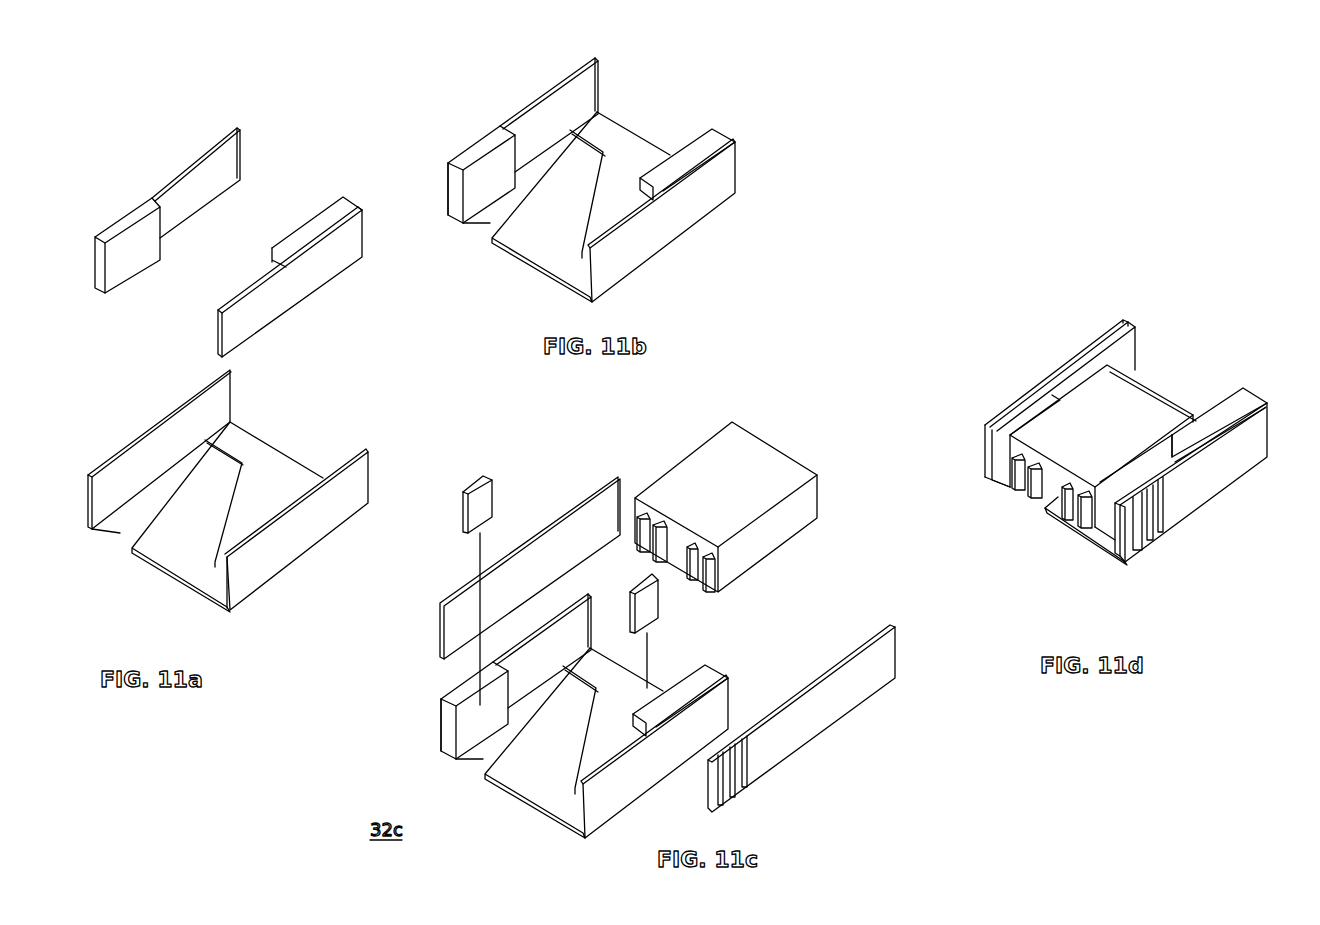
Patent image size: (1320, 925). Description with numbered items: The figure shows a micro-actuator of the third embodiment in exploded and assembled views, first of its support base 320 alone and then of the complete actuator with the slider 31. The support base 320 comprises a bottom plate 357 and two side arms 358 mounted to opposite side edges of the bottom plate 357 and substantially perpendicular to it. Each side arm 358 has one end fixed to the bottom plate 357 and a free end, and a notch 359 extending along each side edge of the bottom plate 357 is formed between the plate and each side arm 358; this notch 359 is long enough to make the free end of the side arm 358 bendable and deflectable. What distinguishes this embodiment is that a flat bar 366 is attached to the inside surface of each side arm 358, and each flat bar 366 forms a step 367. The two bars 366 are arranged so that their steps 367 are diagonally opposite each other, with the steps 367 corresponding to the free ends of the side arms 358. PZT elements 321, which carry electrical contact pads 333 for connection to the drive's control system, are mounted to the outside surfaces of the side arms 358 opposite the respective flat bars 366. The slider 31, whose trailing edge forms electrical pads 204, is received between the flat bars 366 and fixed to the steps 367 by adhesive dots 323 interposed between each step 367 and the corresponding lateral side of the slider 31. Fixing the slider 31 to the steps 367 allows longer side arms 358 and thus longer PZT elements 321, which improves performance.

In FIG. 11C, the slider 31 is at (768, 470).
In FIG. 11D, the slider 31 is at (1155, 398).
In FIG. 11C, the electrical pads 204 is at (710, 570).
In FIG. 11D, the electrical pads 204 is at (1003, 487).
In FIG. 11A, the support base 320 is at (162, 575).
In FIG. 11B, the support base 320 is at (512, 263).
In FIG. 11C, the support base 320 is at (558, 756).
In FIG. 11D, the support base 320 is at (1068, 527).
In FIG. 11C, the PZT elements 321 is at (837, 695).
In FIG. 11D, the PZT elements 321 is at (1182, 493).
In FIG. 11C, the adhesive dots 323 is at (480, 500).
In FIG. 11C, the electrical contact pads 333 is at (727, 783).
In FIG. 11D, the electrical contact pads 333 is at (1142, 535).
In FIG. 11A, the bottom plate 357 is at (210, 582).
In FIG. 11B, the bottom plate 357 is at (565, 263).
In FIG. 11C, the bottom plate 357 is at (556, 764).
In FIG. 11D, the bottom plate 357 is at (1110, 533).
In FIG. 11A, the side arms 358 is at (135, 458).
In FIG. 11B, the side arms 358 is at (448, 193).
In FIG. 11C, the side arms 358 is at (563, 758).
In FIG. 11D, the side arms 358 is at (990, 452).
In FIG. 11A, the notch 359 is at (120, 533).
In FIG. 11B, the notch 359 is at (490, 223).
In FIG. 11C, the notch 359 is at (438, 778).
In FIG. 11D, the notch 359 is at (1040, 505).
In FIG. 11A, the flat bar 366 is at (192, 173).
In FIG. 11B, the flat bar 366 is at (547, 115).
In FIG. 11C, the flat bar 366 is at (573, 645).
In FIG. 11D, the flat bar 366 is at (1113, 353).
In FIG. 11A, the step 367 is at (133, 237).
In FIG. 11B, the step 367 is at (483, 178).
In FIG. 11C, the step 367 is at (547, 689).
In FIG. 11D, the step 367 is at (1022, 415).